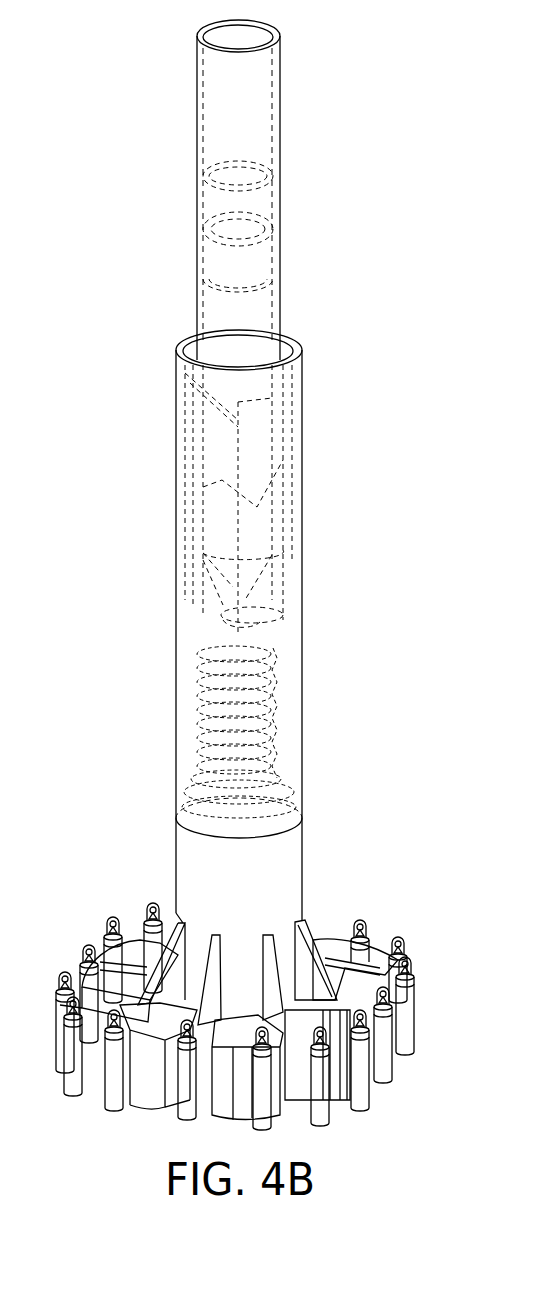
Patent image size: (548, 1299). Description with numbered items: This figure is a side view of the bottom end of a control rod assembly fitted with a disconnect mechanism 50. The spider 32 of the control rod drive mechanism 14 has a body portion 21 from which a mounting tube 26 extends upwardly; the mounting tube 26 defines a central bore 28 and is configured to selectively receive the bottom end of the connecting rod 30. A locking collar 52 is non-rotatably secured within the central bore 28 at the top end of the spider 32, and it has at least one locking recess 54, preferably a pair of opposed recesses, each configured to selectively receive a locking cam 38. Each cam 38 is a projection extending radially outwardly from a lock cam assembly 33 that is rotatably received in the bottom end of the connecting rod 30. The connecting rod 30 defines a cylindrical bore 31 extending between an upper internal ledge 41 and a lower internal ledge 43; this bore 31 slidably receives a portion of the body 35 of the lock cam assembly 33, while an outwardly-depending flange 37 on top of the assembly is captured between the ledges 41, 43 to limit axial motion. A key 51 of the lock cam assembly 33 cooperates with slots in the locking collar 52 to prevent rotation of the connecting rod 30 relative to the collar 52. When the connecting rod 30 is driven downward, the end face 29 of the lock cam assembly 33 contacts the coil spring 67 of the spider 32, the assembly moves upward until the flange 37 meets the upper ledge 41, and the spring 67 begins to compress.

The control rod drive mechanism 14 is at (157, 83).
The connecting rod 30 is at (278, 117).
The lock cam assembly 33 is at (293, 199).
The upper internal ledge 41 is at (220, 190).
The cylindrical bore 31 is at (240, 204).
The lower internal ledge 43 is at (210, 285).
The flange 37 is at (247, 267).
The body 35 is at (246, 326).
The locking collar 52 is at (293, 392).
The key 51 is at (257, 428).
The disconnect mechanism 50 is at (152, 451).
The locking recess 54 is at (225, 602).
The locking cam 38 is at (197, 580).
The end face 29 is at (213, 617).
The central bore 28 is at (287, 642).
The coil spring 67 is at (202, 692).
The mounting tube 26 is at (302, 738).
The spider 32 is at (322, 905).
The body portion 21 is at (417, 1017).